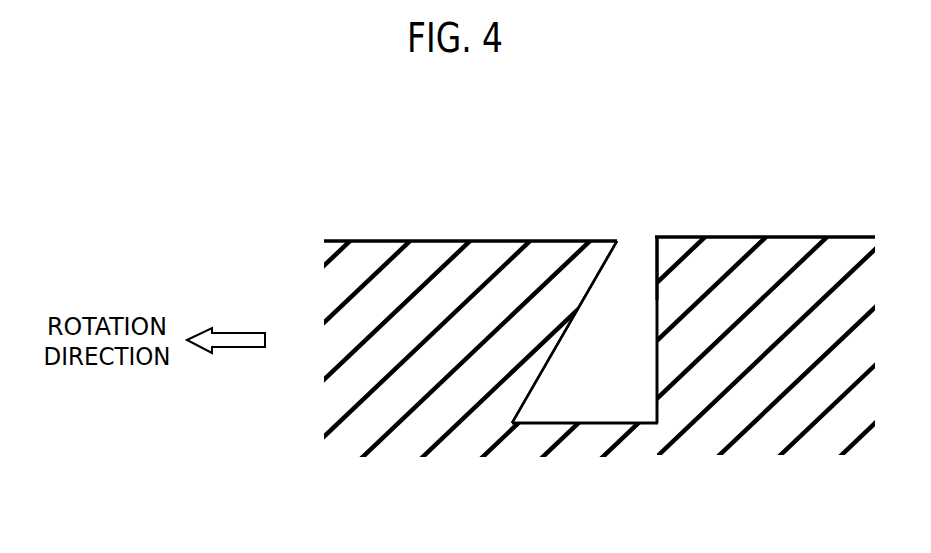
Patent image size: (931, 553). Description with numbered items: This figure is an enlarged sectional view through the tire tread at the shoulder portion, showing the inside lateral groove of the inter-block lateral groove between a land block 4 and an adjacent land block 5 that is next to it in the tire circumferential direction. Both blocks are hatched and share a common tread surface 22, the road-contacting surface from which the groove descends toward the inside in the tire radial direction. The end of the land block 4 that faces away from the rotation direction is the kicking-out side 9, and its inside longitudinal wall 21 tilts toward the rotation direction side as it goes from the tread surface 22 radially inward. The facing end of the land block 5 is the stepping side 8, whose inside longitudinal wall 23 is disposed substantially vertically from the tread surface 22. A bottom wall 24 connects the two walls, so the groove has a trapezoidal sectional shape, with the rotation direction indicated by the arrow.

The land block 4 is at (443, 241).
The adjacent land block 5 is at (806, 237).
The tread surface 22 is at (507, 241).
The kicking-out side 9 is at (568, 252).
The stepping side 8 is at (672, 250).
The inside longitudinal wall 21 is at (562, 372).
The inside longitudinal wall 23 is at (657, 368).
The bottom wall 24 is at (591, 423).